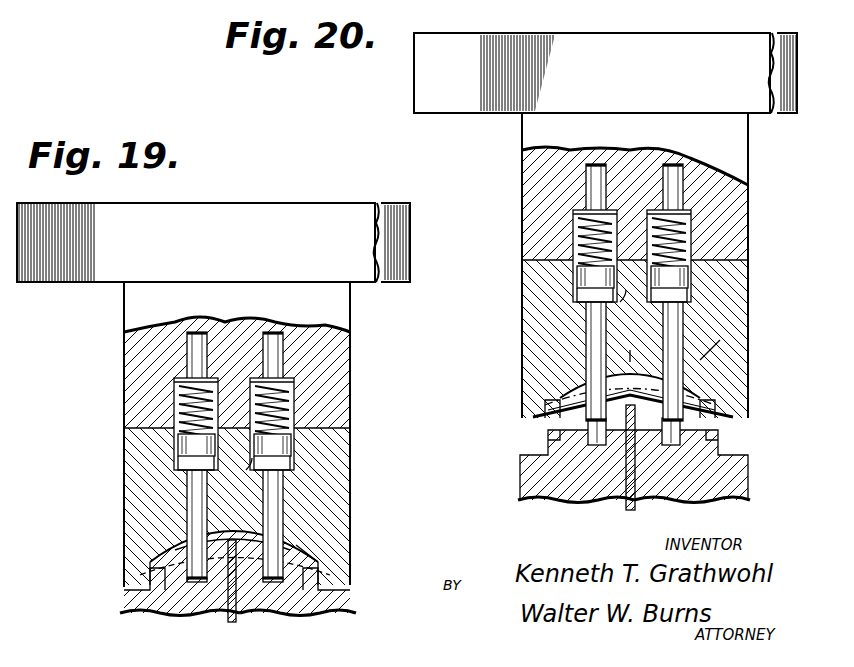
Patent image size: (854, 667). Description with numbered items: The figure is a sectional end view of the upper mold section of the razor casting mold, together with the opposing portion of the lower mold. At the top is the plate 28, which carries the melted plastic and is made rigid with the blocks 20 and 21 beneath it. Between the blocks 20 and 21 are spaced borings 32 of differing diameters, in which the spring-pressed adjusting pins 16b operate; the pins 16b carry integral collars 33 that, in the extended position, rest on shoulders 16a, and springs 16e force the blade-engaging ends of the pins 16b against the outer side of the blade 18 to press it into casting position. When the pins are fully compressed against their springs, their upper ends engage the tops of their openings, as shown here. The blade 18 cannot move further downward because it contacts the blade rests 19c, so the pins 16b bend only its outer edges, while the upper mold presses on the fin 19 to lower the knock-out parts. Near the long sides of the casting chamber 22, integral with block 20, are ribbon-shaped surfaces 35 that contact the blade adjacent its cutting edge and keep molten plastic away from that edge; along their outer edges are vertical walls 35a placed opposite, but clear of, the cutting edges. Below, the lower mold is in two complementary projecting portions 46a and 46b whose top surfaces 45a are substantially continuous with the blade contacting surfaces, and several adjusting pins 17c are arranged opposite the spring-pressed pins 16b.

In FIG. 19, the plate 28 is at (236, 252).
In FIG. 20, the plate 28 is at (628, 82).
In FIG. 19, the block 21 is at (350, 316).
In FIG. 20, the block 21 is at (742, 162).
In FIG. 19, the borings 32 is at (227, 334).
In FIG. 20, the borings 32 is at (663, 172).
In FIG. 19, the block 20 is at (124, 441).
In FIG. 20, the block 20 is at (522, 270).
In FIG. 19, the spring-pressed adjusting pins 16b is at (296, 308).
In FIG. 20, the spring-pressed adjusting pins 16b is at (754, 340).
In FIG. 19, the springs 16e is at (362, 388).
In FIG. 20, the springs 16e is at (754, 212).
In FIG. 19, the shoulders 16a is at (360, 472).
In FIG. 20, the shoulders 16a is at (754, 302).
In FIG. 19, the collars 33 is at (250, 470).
In FIG. 20, the collars 33 is at (615, 302).
In FIG. 19, the blade rests 19c is at (230, 541).
In FIG. 20, the blade rests 19c is at (633, 401).
In FIG. 19, the chamber 22 is at (292, 545).
In FIG. 20, the chamber 22 is at (706, 357).
In FIG. 19, the ribbon-shaped surfaces 35 is at (170, 543).
In FIG. 20, the ribbon-shaped surfaces 35 is at (570, 375).
In FIG. 19, the vertical walls 35a is at (354, 564).
In FIG. 20, the vertical walls 35a is at (754, 395).
In FIG. 19, the projecting portion of lower mold 46a is at (340, 608).
In FIG. 20, the projecting portion of lower mold 46a is at (740, 491).
In FIG. 19, the projecting portion of lower mold 46b is at (124, 602).
In FIG. 20, the projecting portion of lower mold 46b is at (522, 480).
In FIG. 19, the adjusting pins 17c is at (290, 627).
In FIG. 20, the adjusting pins 17c is at (730, 442).
In FIG. 19, the fin 19 is at (236, 620).
In FIG. 20, the fin 19 is at (636, 506).
In FIG. 20, the blade 18 is at (634, 351).
In FIG. 20, the top surfaces 45a is at (754, 423).